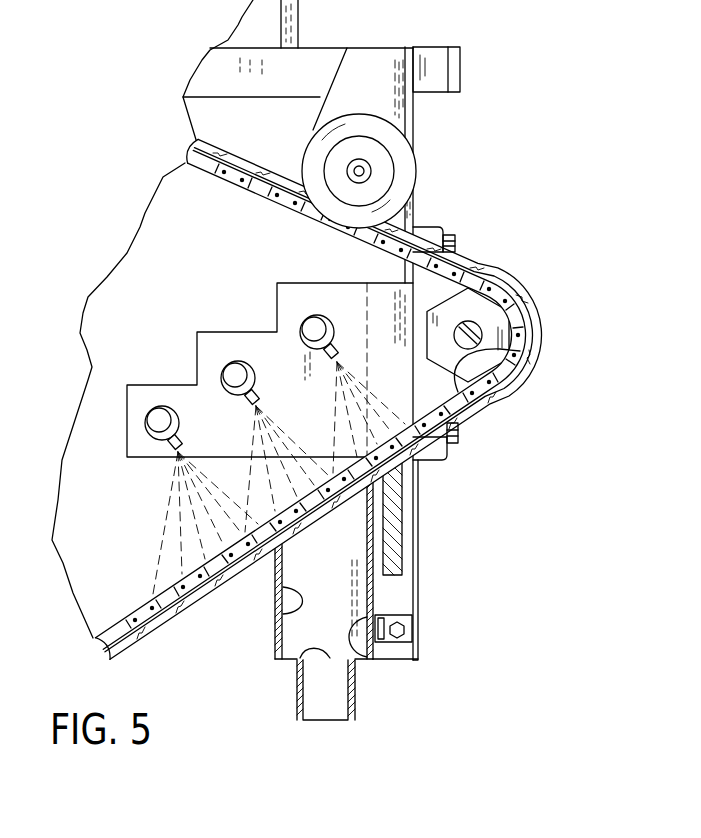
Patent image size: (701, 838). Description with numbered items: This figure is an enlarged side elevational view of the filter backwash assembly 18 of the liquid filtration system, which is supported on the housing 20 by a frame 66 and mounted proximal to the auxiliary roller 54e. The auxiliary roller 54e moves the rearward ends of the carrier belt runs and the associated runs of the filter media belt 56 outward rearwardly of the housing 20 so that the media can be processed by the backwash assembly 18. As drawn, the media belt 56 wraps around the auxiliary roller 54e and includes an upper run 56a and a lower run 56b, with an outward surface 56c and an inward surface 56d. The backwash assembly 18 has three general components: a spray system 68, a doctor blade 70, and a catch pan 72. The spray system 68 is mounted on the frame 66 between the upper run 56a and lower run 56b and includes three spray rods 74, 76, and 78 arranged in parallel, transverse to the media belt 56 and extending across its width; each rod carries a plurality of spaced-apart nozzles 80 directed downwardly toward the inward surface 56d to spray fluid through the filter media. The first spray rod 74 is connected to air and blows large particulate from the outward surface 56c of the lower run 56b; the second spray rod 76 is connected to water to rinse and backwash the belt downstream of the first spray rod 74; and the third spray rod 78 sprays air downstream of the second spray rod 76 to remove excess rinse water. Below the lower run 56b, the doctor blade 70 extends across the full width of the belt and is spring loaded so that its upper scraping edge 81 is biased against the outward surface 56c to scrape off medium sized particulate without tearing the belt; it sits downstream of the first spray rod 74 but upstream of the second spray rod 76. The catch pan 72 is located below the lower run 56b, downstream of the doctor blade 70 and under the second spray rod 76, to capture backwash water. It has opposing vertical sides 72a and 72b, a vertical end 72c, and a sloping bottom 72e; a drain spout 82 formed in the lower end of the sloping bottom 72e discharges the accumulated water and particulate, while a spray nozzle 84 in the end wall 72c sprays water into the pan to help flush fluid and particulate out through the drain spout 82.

The filter backwash assembly 18 is at (499, 207).
The housing 20 is at (203, 217).
The auxiliary roller 54e is at (495, 314).
The filter media belt 56 is at (357, 368).
The upper run 56a is at (462, 262).
The lower run 56b is at (482, 410).
The outward surface 56c is at (470, 417).
The inward surface 56d is at (520, 351).
The frame 66 is at (408, 199).
The spray system 68 is at (240, 316).
The doctor blade 70 is at (402, 527).
The catch pan 72 is at (272, 659).
The vertical side 72a is at (365, 661).
The vertical side 72b is at (302, 599).
The vertical end 72c is at (358, 596).
The sloping bottom 72e is at (293, 661).
The first spray rod 74 is at (316, 314).
The second spray rod 76 is at (226, 369).
The third spray rod 78 is at (149, 411).
The nozzles 80 is at (330, 358).
The upper scraping edge 81 is at (417, 462).
The drain spout 82 is at (330, 712).
The spray nozzle 84 is at (325, 563).